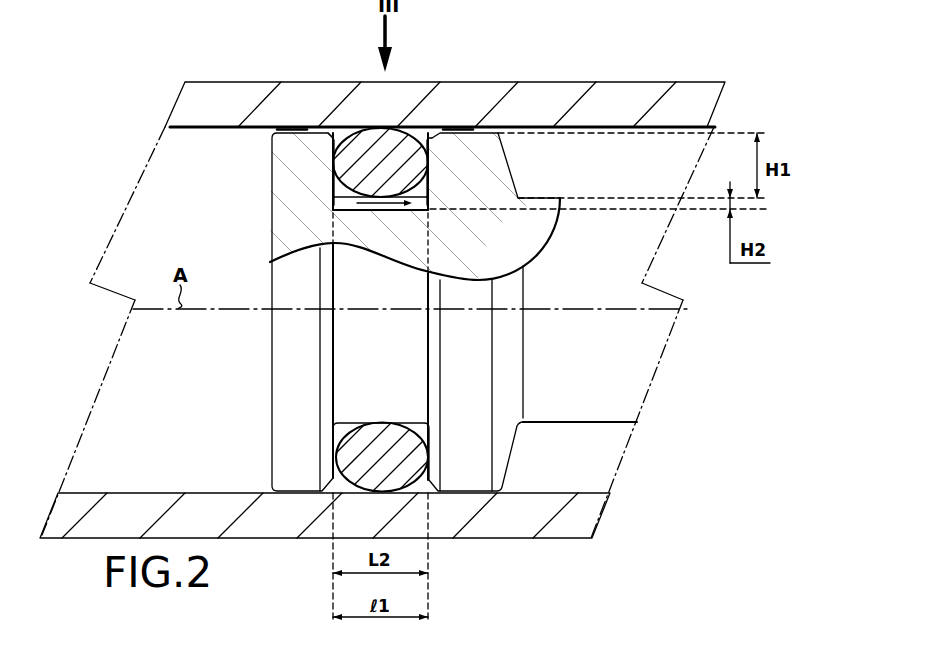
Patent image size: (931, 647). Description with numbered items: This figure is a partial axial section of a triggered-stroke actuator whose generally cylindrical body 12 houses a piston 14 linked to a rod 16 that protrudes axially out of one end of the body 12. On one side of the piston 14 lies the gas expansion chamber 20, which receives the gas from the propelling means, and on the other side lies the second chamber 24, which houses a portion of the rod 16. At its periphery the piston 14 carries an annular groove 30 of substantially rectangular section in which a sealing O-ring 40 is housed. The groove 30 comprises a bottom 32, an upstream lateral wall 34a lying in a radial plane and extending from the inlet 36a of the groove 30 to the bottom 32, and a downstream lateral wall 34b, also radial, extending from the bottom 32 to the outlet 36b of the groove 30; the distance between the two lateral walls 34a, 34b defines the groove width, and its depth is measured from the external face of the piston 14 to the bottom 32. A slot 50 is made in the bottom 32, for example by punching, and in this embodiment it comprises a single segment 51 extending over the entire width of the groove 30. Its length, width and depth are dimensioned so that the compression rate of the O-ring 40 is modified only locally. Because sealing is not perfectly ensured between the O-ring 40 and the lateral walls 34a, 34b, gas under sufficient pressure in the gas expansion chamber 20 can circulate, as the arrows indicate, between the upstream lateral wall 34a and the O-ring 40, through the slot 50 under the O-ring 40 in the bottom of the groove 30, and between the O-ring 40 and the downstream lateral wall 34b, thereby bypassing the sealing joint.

The body 12 is at (593, 107).
The piston 14 is at (299, 142).
The rod 16 is at (618, 386).
The gas expansion chamber 20 is at (100, 440).
The second chamber 24 is at (640, 162).
The annular groove 30 is at (430, 193).
The bottom 32 is at (347, 208).
The upstream lateral wall 34a is at (343, 198).
The downstream lateral wall 34b is at (431, 176).
The inlet 36a is at (332, 136).
The outlet 36b is at (428, 135).
The sealing O-ring 40 is at (381, 143).
The slot 50 is at (358, 213).
The segment 51 is at (392, 207).